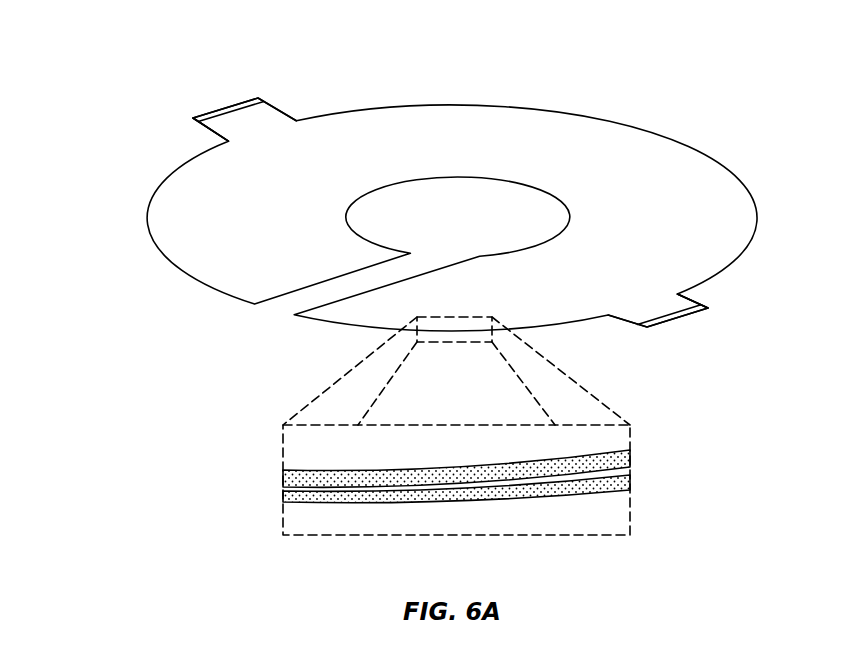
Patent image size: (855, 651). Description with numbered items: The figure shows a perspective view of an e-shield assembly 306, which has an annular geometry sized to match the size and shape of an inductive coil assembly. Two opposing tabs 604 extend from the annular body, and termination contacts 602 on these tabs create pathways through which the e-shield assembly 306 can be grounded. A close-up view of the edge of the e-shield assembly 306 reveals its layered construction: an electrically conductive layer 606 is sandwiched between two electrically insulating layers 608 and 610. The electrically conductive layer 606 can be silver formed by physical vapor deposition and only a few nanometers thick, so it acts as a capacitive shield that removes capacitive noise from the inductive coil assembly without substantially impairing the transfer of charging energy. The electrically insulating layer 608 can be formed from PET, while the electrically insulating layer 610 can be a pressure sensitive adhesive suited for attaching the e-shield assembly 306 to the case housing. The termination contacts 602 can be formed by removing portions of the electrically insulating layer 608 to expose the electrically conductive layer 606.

The e-shield assembly 306 is at (112, 74).
The termination contacts 602 is at (233, 103).
The tabs 604 is at (222, 137).
The electrically conductive layer 606 is at (471, 426).
The electrically insulating layer 608 is at (632, 453).
The electrically insulating layer 610 is at (632, 477).